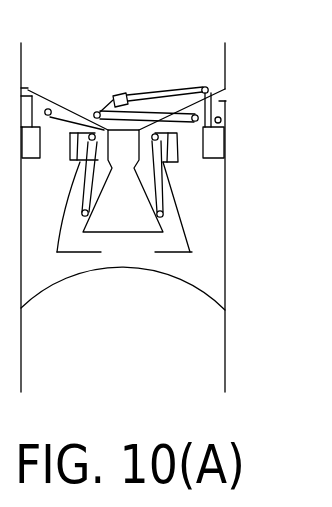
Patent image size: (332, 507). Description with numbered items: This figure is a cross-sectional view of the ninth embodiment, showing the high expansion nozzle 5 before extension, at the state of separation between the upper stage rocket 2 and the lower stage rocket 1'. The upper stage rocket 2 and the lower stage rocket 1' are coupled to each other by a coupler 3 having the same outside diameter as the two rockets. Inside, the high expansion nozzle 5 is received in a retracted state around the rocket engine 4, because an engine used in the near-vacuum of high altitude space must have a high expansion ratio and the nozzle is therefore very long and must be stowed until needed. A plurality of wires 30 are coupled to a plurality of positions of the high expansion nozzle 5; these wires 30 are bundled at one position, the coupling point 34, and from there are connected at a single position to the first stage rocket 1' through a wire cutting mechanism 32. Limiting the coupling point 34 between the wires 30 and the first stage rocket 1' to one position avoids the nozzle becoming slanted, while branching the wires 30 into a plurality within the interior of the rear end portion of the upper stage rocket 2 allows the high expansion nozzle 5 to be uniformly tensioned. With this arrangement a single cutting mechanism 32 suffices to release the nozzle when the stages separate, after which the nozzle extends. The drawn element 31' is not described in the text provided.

The lower stage rocket 1' is at (155, 221).
The upper stage rocket 2 is at (216, 66).
The coupler 3 is at (226, 100).
The rocket engine 4 is at (132, 218).
The high expansion nozzle 5 is at (195, 250).
The wires 30 is at (77, 103).
The link 31' is at (176, 77).
The wire cutting mechanism 32 is at (227, 152).
The coupling point 34 is at (112, 98).